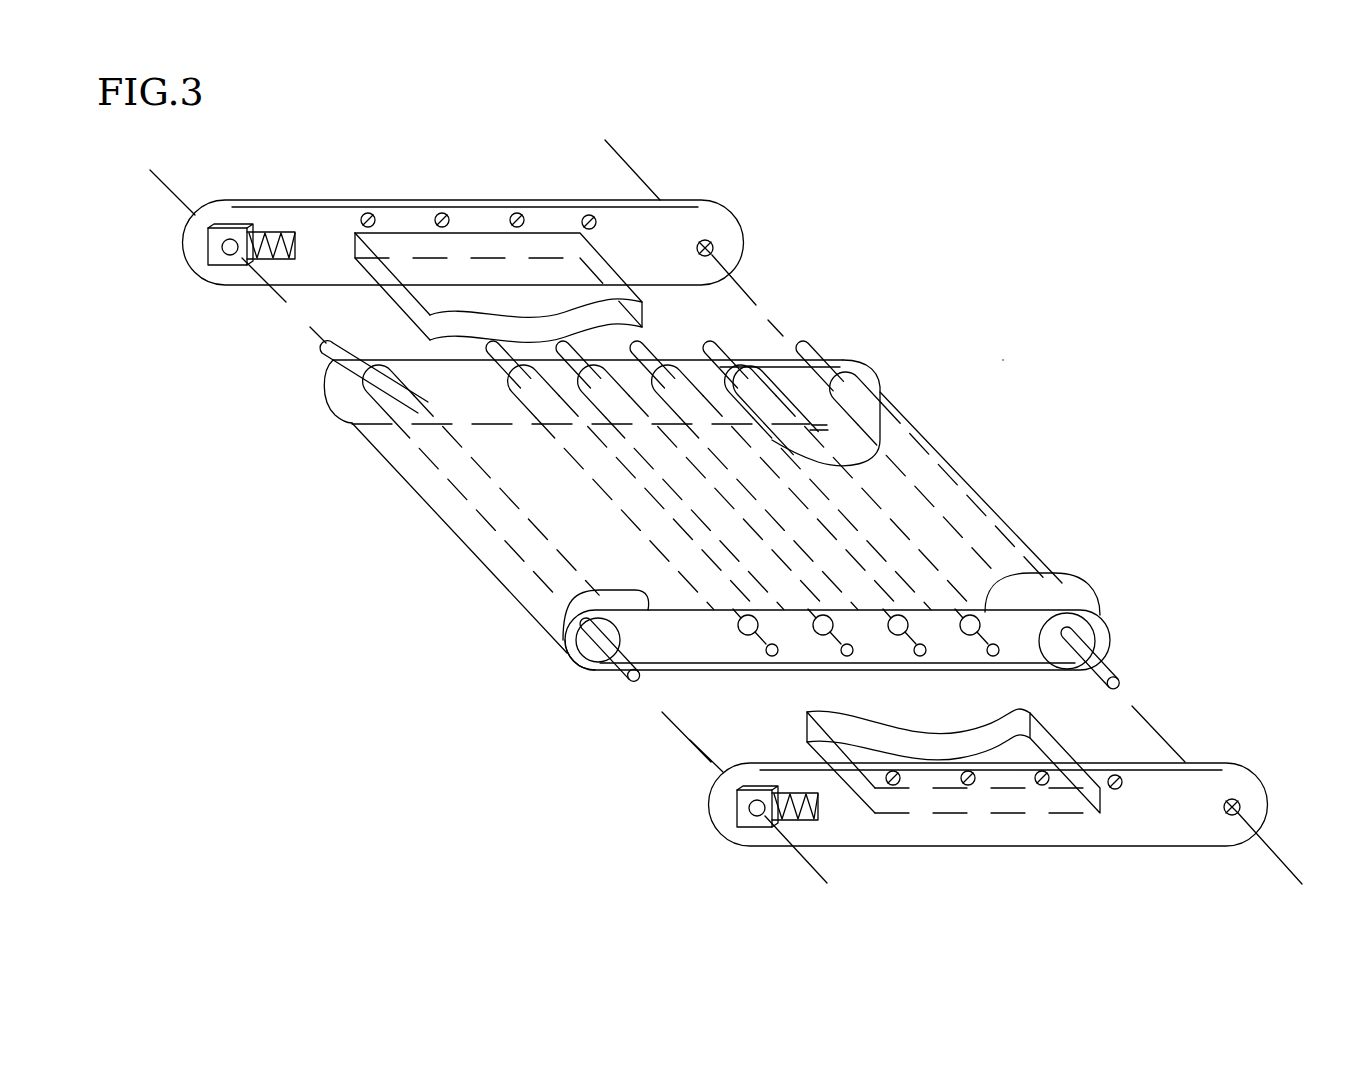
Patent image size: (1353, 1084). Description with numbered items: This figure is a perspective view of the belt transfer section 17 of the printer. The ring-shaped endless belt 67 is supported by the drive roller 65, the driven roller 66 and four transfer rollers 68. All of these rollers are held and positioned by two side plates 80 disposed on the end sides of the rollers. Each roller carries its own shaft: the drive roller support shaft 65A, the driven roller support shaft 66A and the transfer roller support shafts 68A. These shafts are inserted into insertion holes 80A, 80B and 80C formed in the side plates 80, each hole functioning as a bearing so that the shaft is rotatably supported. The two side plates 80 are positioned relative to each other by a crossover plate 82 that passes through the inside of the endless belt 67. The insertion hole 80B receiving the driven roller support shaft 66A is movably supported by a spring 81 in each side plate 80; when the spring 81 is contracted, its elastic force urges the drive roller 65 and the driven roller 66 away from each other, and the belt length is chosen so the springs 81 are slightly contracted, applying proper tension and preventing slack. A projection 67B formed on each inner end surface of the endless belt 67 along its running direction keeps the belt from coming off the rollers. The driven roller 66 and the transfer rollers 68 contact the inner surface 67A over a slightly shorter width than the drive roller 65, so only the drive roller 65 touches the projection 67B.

The belt transfer section 17 is at (1005, 358).
The drive roller 65 is at (855, 386).
The drive roller support shaft 65A is at (1101, 683).
The driven roller 66 is at (572, 657).
The driven roller support shaft 66A is at (623, 687).
The endless belt 67 is at (681, 360).
The inner surface 67A is at (1020, 648).
The projection 67B is at (811, 430).
The transfer roller 68 is at (960, 631).
The transfer roller support shaft 68A is at (986, 650).
The side plate 80 is at (315, 216).
The insertion hole 80A is at (705, 240).
The insertion hole 80B is at (230, 239).
The insertion hole 80C is at (368, 212).
The spring 81 is at (267, 230).
The crossover plate 82 is at (374, 286).